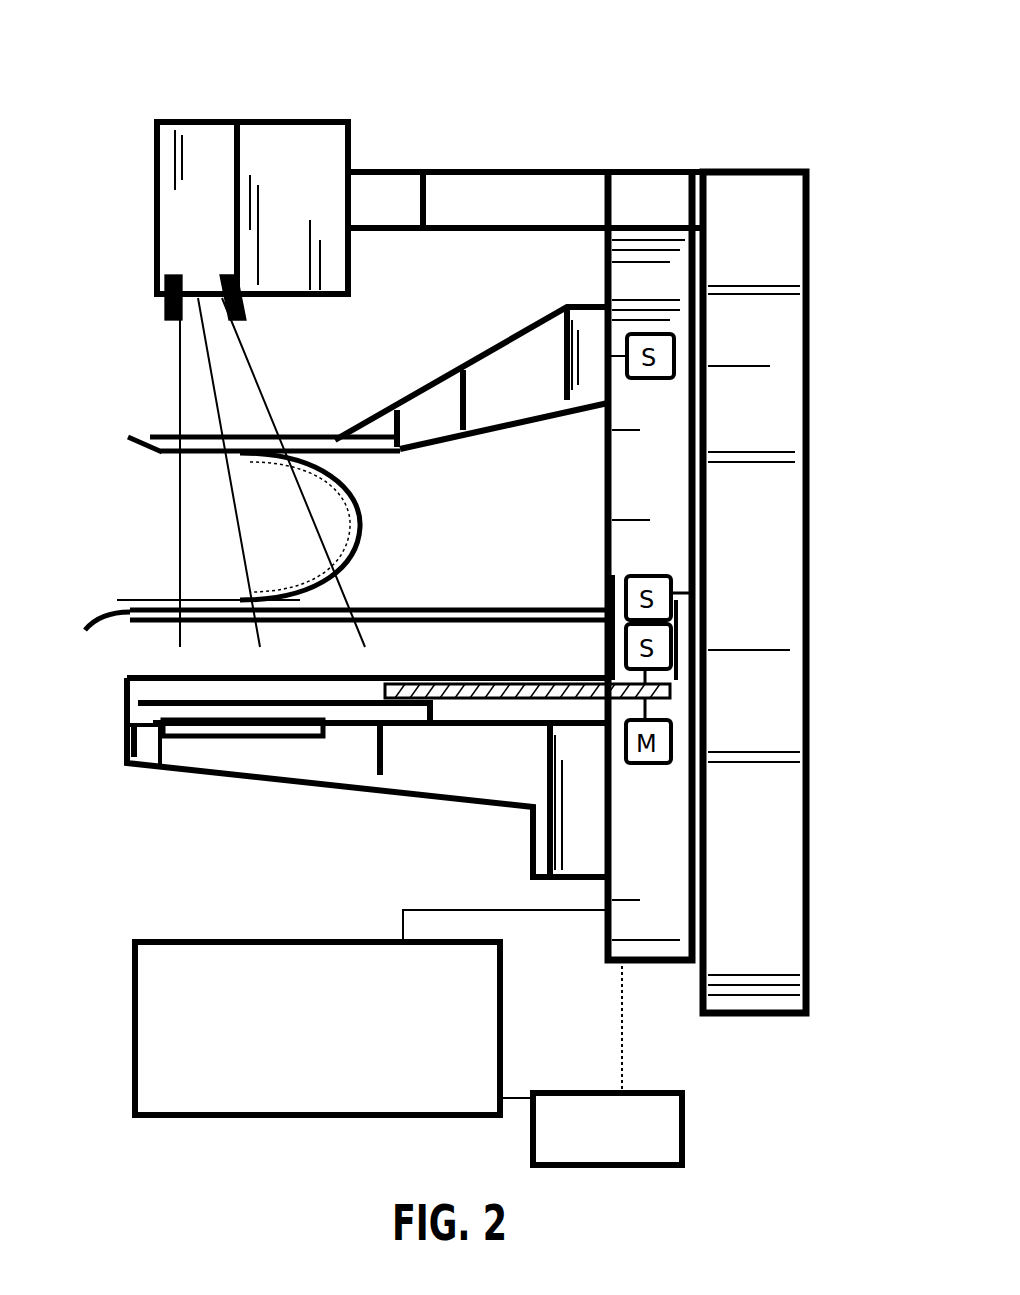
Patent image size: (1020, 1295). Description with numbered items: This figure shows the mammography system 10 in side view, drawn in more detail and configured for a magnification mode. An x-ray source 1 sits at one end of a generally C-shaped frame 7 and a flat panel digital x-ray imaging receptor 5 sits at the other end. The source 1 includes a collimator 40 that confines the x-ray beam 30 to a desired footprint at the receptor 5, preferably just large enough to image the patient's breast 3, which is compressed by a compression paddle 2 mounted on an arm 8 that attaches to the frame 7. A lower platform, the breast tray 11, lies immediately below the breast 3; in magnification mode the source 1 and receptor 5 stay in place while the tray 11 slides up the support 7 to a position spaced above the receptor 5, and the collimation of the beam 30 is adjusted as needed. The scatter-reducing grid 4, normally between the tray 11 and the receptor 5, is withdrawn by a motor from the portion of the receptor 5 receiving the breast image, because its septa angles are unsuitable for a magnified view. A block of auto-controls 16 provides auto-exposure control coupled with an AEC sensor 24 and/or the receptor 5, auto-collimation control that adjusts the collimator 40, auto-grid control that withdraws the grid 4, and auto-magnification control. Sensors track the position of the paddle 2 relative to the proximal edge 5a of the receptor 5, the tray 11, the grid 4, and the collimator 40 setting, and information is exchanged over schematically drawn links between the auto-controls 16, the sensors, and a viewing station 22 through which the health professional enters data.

The x-ray source 1 is at (226, 120).
The compression paddle 2 is at (130, 438).
The breast 3 is at (356, 508).
The scatter-reducing grid 4 is at (497, 707).
The flat panel digital x-ray imaging receptor 5 is at (162, 725).
The proximal edge 5a is at (136, 706).
The frame 7 is at (815, 395).
The compression arm 8 is at (456, 362).
The mammography system 10 is at (740, 75).
The breast tray 11 is at (110, 636).
The controller 16 is at (166, 938).
The viewing station 22 is at (683, 1120).
The AEC sensor 24 is at (203, 740).
The x-ray beam 30 is at (173, 410).
The collimator 40 is at (236, 290).